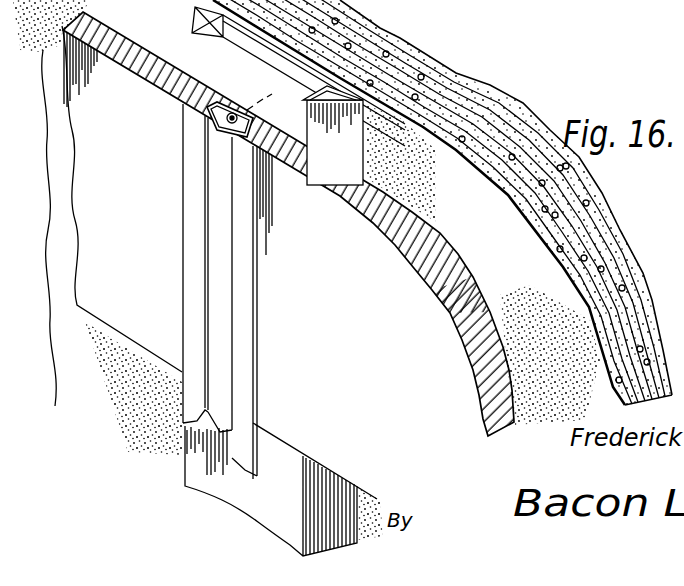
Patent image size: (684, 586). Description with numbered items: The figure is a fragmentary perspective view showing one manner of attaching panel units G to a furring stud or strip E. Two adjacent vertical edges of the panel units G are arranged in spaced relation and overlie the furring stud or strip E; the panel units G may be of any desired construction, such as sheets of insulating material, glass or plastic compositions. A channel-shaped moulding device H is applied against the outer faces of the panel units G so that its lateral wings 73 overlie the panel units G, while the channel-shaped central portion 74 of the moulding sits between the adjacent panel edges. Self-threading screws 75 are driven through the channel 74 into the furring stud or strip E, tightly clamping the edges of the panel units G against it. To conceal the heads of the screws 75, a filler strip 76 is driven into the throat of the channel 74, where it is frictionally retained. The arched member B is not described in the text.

The lateral wings 73 is at (184, 243).
The channel-shaped central portion 74 is at (325, 125).
The self-threading screws 75 is at (240, 108).
The filler strip 76 is at (217, 337).
The arched concrete beam B is at (548, 283).
The furring stud or strip E is at (238, 62).
The panel units G is at (306, 278).
The channel-shaped moulding device H is at (177, 160).